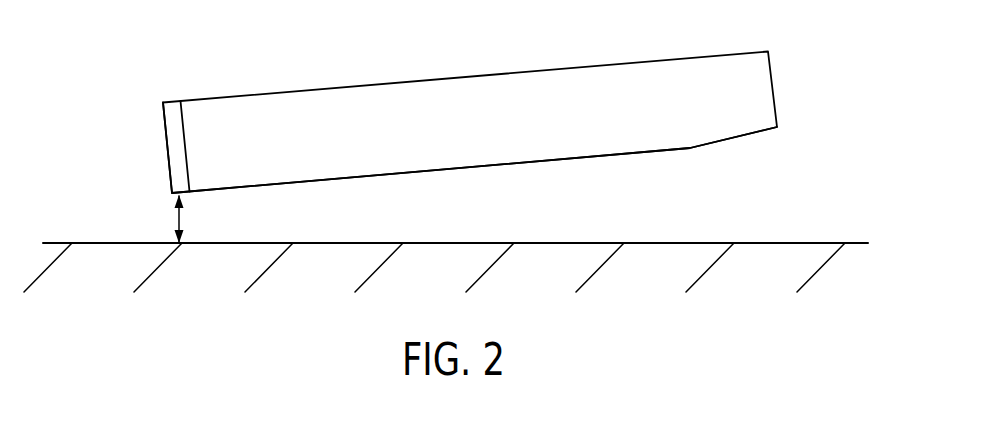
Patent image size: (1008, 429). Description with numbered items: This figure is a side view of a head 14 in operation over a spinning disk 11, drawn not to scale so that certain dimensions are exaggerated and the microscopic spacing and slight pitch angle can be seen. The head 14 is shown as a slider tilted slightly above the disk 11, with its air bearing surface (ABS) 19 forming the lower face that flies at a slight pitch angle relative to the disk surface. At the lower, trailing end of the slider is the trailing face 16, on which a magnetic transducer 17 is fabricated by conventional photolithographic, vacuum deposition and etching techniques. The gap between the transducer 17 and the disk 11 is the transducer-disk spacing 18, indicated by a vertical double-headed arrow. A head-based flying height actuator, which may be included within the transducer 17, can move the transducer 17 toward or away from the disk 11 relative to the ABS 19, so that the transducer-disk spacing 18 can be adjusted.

The spinning disk 11 is at (817, 243).
The head 14 is at (692, 55).
The trailing face 16 is at (184, 140).
The magnetic transducer 17 is at (168, 150).
The transducer-disk spacing 18 is at (182, 220).
The air bearing surface (ABS) 19 is at (532, 162).